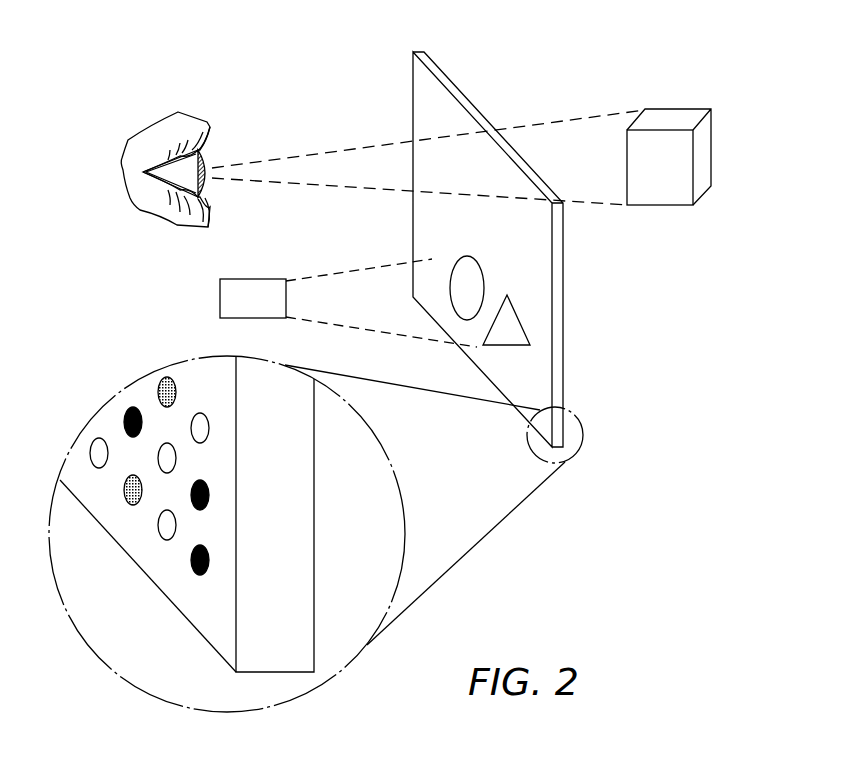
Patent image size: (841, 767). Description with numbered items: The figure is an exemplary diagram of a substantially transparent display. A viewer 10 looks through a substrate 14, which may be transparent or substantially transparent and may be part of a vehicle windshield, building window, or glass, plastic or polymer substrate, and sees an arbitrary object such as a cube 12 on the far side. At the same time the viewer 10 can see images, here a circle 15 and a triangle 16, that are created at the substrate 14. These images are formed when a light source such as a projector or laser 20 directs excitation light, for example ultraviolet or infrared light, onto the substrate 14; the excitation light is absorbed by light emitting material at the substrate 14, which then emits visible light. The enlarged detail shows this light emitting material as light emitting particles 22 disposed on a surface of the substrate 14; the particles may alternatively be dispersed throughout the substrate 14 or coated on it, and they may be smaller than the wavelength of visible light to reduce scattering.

The viewer 10 is at (207, 155).
The cube 12 is at (672, 117).
The substrate 14 is at (480, 117).
The circle 15 is at (448, 282).
The triangle 16 is at (490, 328).
The projector or laser 20 is at (253, 280).
The light emitting particles 22 is at (163, 392).